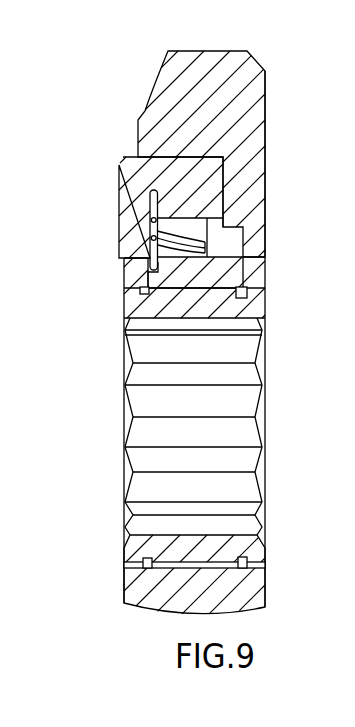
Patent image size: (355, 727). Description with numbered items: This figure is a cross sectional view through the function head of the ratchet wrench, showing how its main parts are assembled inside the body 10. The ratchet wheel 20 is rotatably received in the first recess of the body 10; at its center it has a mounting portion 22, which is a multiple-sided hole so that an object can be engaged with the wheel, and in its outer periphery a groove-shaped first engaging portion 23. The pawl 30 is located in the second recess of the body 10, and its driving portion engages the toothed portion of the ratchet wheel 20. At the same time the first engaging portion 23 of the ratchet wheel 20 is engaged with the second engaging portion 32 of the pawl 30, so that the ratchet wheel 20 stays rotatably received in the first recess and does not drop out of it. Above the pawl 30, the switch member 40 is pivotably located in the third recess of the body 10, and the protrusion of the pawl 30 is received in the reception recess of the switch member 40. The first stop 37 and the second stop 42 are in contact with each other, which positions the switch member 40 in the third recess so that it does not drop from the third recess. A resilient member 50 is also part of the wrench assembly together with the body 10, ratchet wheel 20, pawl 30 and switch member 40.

The body 10 is at (250, 125).
The ratchet wheel 20 is at (137, 553).
The mounting portion 22 is at (247, 430).
The first engaging portion 23 is at (242, 298).
The pawl 30 is at (148, 283).
The second engaging portion 32 is at (245, 293).
The first stop 37 is at (207, 257).
The switch member 40 is at (123, 160).
The second stop 42 is at (217, 232).
The resilient member 50 is at (147, 208).